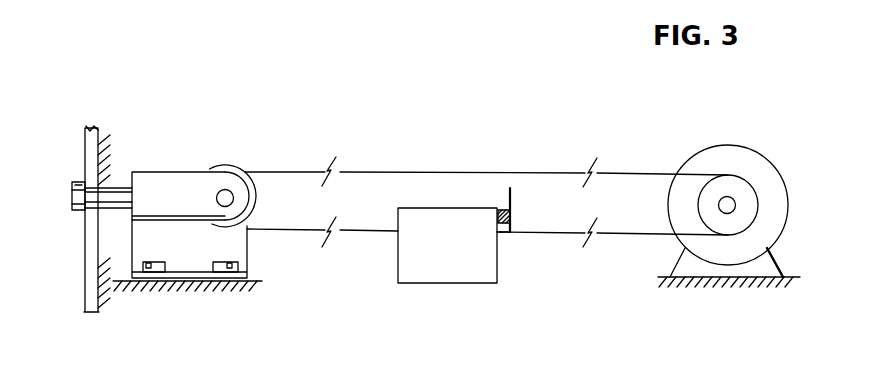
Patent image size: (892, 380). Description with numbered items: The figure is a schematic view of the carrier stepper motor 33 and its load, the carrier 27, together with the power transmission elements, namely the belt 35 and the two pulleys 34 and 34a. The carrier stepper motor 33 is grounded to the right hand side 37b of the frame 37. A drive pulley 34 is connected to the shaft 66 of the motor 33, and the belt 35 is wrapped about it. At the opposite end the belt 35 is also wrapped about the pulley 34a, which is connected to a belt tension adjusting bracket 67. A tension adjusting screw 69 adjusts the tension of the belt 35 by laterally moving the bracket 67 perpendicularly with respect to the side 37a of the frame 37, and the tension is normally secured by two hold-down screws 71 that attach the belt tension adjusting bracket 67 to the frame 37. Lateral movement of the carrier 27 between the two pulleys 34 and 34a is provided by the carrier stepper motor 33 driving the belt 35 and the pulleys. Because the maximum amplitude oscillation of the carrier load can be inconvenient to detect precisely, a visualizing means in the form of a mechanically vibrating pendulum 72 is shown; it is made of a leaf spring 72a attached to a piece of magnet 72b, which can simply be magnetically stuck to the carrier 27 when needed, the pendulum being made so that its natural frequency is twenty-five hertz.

The side of frame 37a is at (95, 140).
The tension adjusting screw 69 is at (78, 214).
The pulley 34a is at (257, 204).
The belt 35 is at (624, 234).
The belt tension adjusting bracket 67 is at (247, 248).
The hold-down screws 71 is at (222, 262).
The frame 37 is at (199, 299).
The carrier 27 is at (430, 275).
The pendulum 72 is at (528, 183).
The leaf spring 72a is at (507, 198).
The piece of magnet 72b is at (512, 221).
The carrier stepper motor 33 is at (757, 152).
The drive pulley 34 is at (755, 198).
The motor shaft 66 is at (735, 209).
The right hand side of frame 37b is at (727, 294).